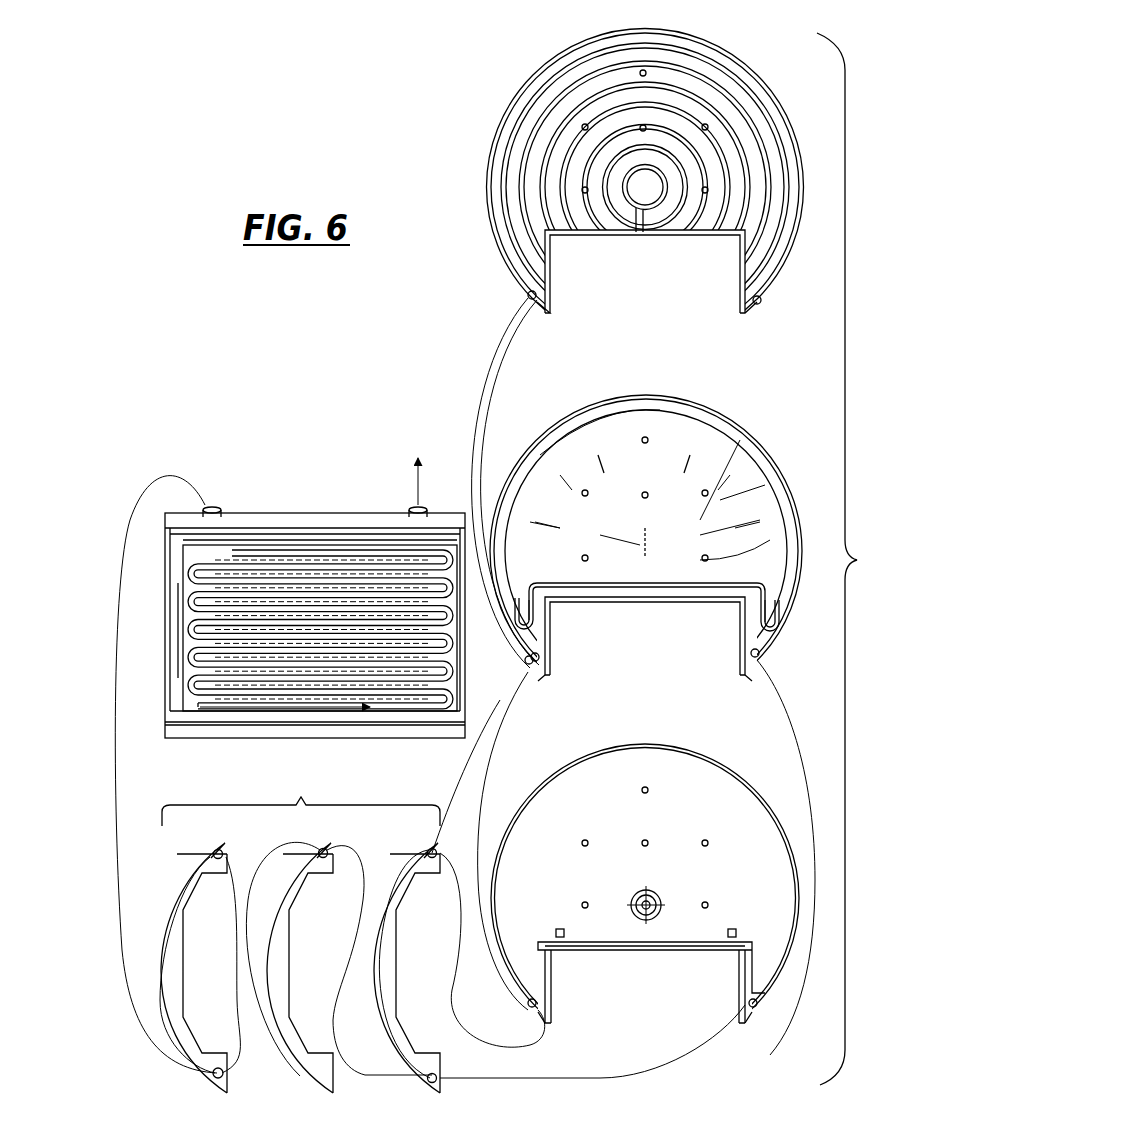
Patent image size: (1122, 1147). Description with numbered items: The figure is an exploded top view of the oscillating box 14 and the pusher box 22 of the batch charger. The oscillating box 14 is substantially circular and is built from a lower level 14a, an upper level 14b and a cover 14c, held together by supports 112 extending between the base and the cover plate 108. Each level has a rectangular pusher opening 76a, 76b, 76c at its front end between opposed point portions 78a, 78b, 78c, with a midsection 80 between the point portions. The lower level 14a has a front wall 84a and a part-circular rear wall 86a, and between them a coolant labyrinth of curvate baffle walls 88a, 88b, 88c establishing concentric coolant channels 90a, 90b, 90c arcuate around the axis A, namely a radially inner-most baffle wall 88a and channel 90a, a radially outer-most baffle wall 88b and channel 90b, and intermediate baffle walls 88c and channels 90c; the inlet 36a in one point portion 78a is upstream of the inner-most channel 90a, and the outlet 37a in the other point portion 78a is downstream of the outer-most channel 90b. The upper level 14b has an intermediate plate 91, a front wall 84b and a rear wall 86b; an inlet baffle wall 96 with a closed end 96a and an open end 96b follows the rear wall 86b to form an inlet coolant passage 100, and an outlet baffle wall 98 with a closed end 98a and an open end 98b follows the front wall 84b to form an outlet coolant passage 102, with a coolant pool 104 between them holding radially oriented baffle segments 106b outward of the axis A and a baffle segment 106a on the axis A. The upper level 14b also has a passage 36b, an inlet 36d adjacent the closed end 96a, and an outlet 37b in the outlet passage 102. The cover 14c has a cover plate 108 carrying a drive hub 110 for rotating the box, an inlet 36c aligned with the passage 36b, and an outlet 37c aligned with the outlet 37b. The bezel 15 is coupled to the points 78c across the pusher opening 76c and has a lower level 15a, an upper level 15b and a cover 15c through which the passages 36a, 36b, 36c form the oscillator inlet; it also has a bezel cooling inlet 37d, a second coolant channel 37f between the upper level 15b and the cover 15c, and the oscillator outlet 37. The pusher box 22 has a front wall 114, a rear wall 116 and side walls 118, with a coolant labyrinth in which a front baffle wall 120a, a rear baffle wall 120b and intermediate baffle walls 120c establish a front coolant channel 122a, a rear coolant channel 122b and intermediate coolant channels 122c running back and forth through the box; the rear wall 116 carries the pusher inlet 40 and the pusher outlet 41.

The oscillating box 14 is at (850, 559).
The lower level 14a is at (493, 96).
The upper level 14b is at (782, 450).
The cover 14c is at (795, 1010).
The bezel 15 is at (301, 801).
The lower level 15a is at (424, 848).
The upper level 15b is at (300, 1070).
The cover 15c is at (205, 847).
The pusher box 22 is at (285, 430).
The inlet 36a is at (542, 300).
The passage 36b is at (545, 676).
The inlet 36c is at (522, 1005).
The inlet 36d is at (522, 664).
The oscillator outlet 37 is at (213, 1077).
The outlet 37a is at (520, 290).
The outlet 37b is at (762, 663).
The outlet 37c is at (742, 1005).
The bezel cooling inlet 37d is at (438, 1080).
The second coolant channel 37f is at (236, 997).
The pusher inlet 40 is at (214, 506).
The pusher outlet 41 is at (416, 500).
The notch of first plate 76a is at (675, 265).
The notch of second plate 76b is at (712, 626).
The pusher opening 76c is at (655, 968).
The point portion 78a is at (752, 320).
The point portion 78b is at (745, 688).
The points 78c is at (530, 1028).
The midsection 80 is at (642, 174).
The front wall 84a is at (580, 238).
The front wall 84b is at (552, 608).
The rear wall 86a is at (547, 62).
The rear wall 86b is at (575, 415).
The radially inner-most baffle wall 88a is at (633, 185).
The radially outer-most baffle wall 88b is at (757, 80).
The intermediate baffle wall 88c is at (770, 175).
The radially inner-most coolant channel 90a is at (640, 200).
The radially outer-most coolant channel 90b is at (735, 62).
The intermediate coolant channel 90c is at (770, 200).
The intermediate plate 91 is at (660, 533).
The inlet baffle wall 96 is at (695, 430).
The closed end 96a is at (548, 645).
The open end 96b is at (773, 630).
The outlet baffle wall 98 is at (650, 586).
The closed end 98a is at (530, 600).
The open end 98b is at (775, 645).
The inlet coolant passage 100 is at (641, 412).
The outlet coolant passage 102 is at (608, 592).
The coolant pool 104 is at (722, 512).
The baffle segment 106a is at (643, 545).
The baffle segments 106b is at (685, 462).
The cover plate 108 is at (738, 875).
The drive hub 110 is at (632, 890).
The supports 112 is at (643, 73).
The front wall 114 is at (248, 738).
The rear wall 116 is at (292, 512).
The side walls 118 is at (168, 575).
The front baffle wall 120a is at (365, 705).
The rear baffle wall 120b is at (323, 548).
The intermediate baffle walls 120c is at (188, 650).
The front coolant channel 122a is at (400, 705).
The rear coolant channel 122b is at (237, 548).
The coolant channels 122c is at (187, 620).
The axis A is at (652, 898).